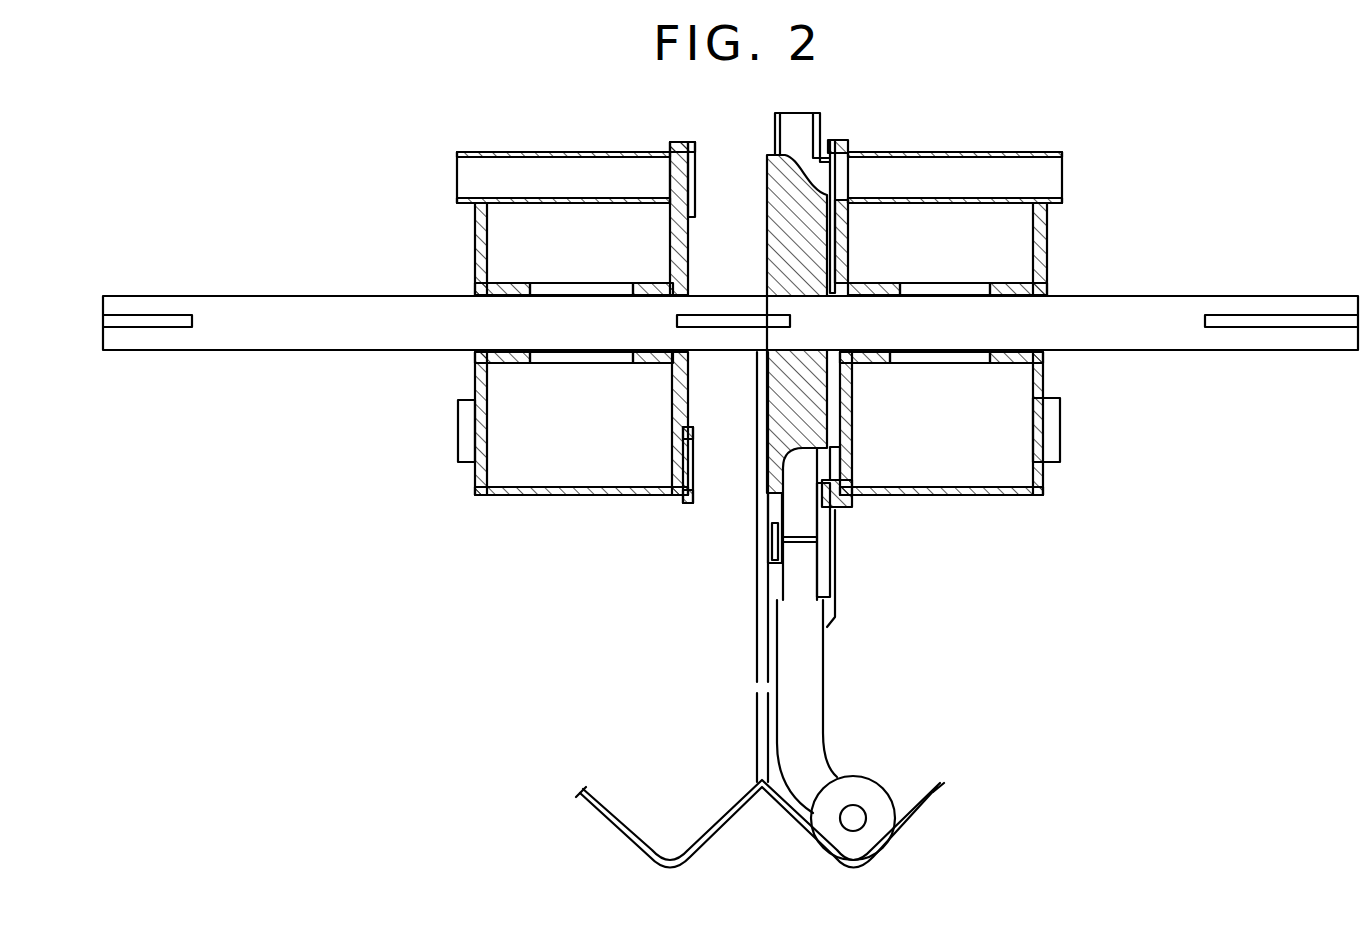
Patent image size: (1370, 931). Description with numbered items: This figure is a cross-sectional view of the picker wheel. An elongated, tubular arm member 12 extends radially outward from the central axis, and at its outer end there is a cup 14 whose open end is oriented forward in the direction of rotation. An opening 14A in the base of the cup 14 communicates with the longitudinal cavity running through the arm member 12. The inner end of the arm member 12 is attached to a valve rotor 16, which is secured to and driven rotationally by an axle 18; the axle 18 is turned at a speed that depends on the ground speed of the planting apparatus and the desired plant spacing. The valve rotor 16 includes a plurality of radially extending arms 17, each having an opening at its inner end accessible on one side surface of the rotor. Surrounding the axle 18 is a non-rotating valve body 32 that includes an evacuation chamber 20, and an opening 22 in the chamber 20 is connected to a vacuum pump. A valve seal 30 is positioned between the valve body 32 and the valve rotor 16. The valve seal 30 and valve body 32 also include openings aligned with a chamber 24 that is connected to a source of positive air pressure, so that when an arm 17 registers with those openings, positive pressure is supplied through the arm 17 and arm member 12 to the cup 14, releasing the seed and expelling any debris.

The arm member 12 is at (822, 710).
The cup 14 is at (870, 777).
The opening 14A is at (862, 822).
The valve rotor 16 is at (760, 156).
The arm 17 is at (773, 112).
The axle 18 is at (1129, 294).
The evacuation chamber 20 is at (500, 462).
The opening 22 is at (1062, 445).
The chamber 24 is at (1050, 157).
The valve seal 30 is at (840, 140).
The valve body 32 is at (580, 496).